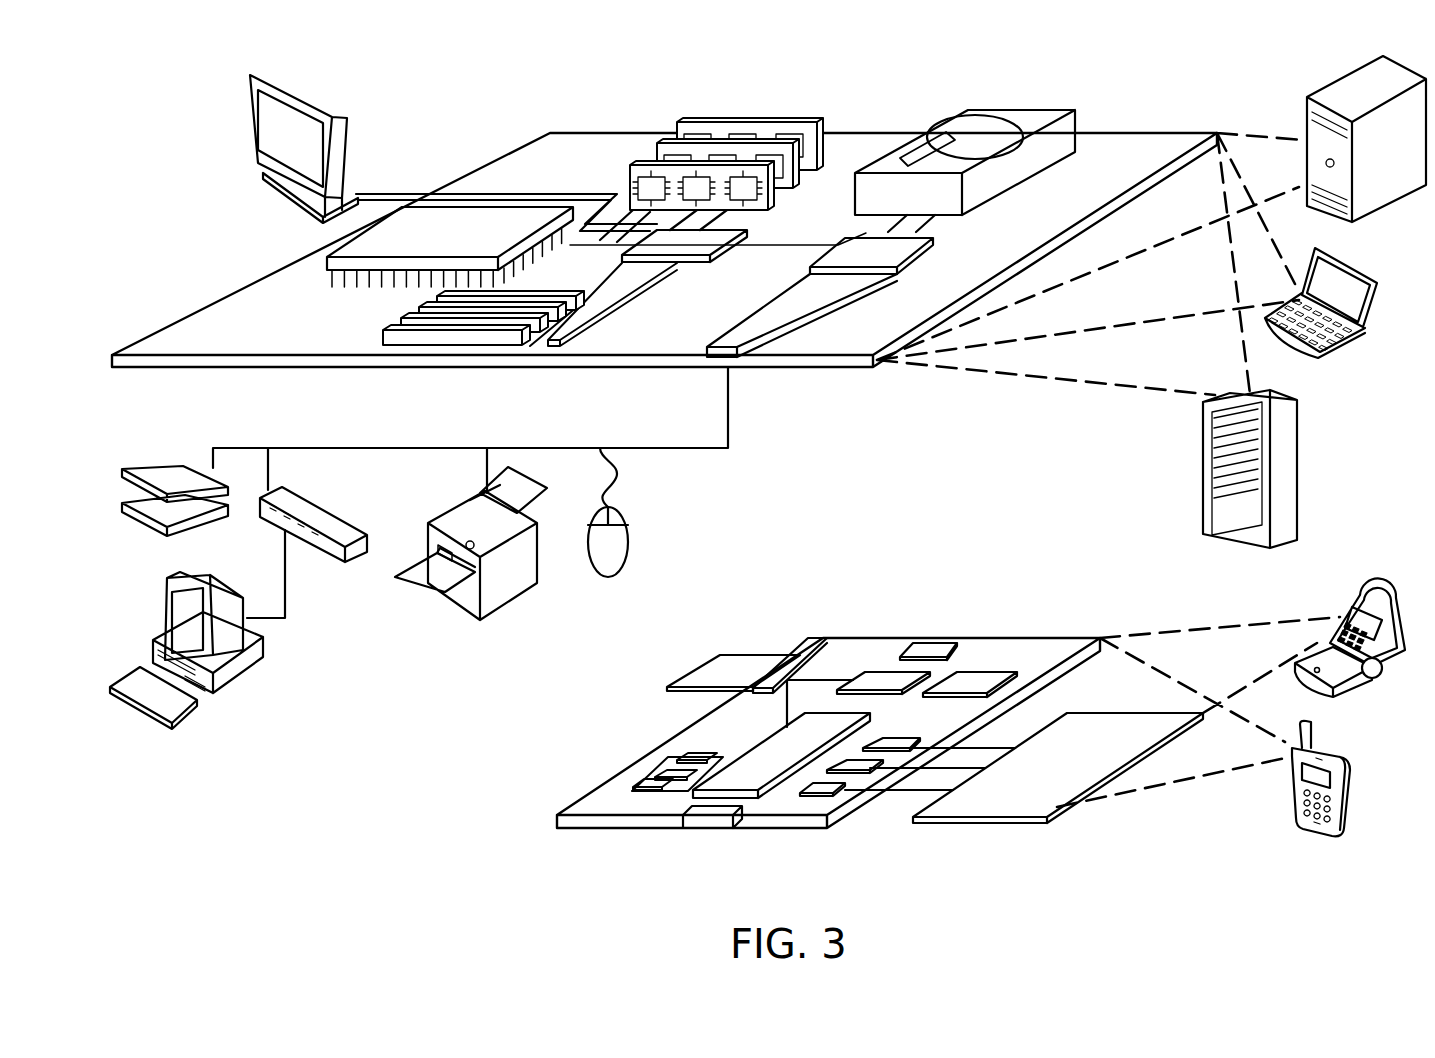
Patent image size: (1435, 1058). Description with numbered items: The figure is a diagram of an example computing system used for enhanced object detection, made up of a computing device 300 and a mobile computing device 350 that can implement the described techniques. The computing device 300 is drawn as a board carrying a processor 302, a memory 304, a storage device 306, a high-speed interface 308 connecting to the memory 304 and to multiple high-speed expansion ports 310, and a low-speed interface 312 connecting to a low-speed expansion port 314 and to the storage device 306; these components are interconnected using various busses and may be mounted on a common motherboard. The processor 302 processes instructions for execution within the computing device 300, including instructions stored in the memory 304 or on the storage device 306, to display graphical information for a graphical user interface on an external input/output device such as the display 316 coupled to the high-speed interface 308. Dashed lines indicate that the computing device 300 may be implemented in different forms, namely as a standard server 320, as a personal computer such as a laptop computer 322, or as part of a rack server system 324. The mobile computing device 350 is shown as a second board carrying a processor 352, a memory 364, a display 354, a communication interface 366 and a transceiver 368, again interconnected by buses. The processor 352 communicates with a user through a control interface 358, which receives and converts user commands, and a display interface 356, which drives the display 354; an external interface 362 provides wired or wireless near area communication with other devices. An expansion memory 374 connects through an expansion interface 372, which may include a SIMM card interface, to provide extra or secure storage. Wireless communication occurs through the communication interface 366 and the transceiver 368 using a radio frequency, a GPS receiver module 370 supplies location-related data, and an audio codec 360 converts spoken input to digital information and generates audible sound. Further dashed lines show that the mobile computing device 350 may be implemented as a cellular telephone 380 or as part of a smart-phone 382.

The computing device 300 is at (181, 90).
The processor 302 is at (300, 260).
The memory 304 is at (700, 92).
The storage device 306 is at (953, 77).
The high-speed interface 308 is at (650, 242).
The high-speed expansion ports 310 is at (413, 323).
The low-speed interface 312 is at (853, 250).
The low-speed expansion port 314 is at (730, 362).
The display 316 is at (313, 92).
The standard server 320 is at (1305, 114).
The laptop computer 322 is at (1350, 345).
The rack server system 324 is at (1203, 503).
The mobile computing device 350 is at (528, 795).
The processor 352 is at (753, 780).
The display 354 is at (1013, 800).
The display interface 356 is at (820, 790).
The control interface 358 is at (858, 770).
The audio codec 360 is at (893, 742).
The external interface 362 is at (713, 822).
The memory 364 is at (640, 780).
The communication interface 366 is at (868, 680).
The transceiver 368 is at (973, 677).
The GPS receiver module 370 is at (937, 640).
The expansion interface 372 is at (787, 652).
The expansion memory 374 is at (713, 653).
The cellular telephone 380 is at (1357, 590).
The smart-phone 382 is at (1292, 783).